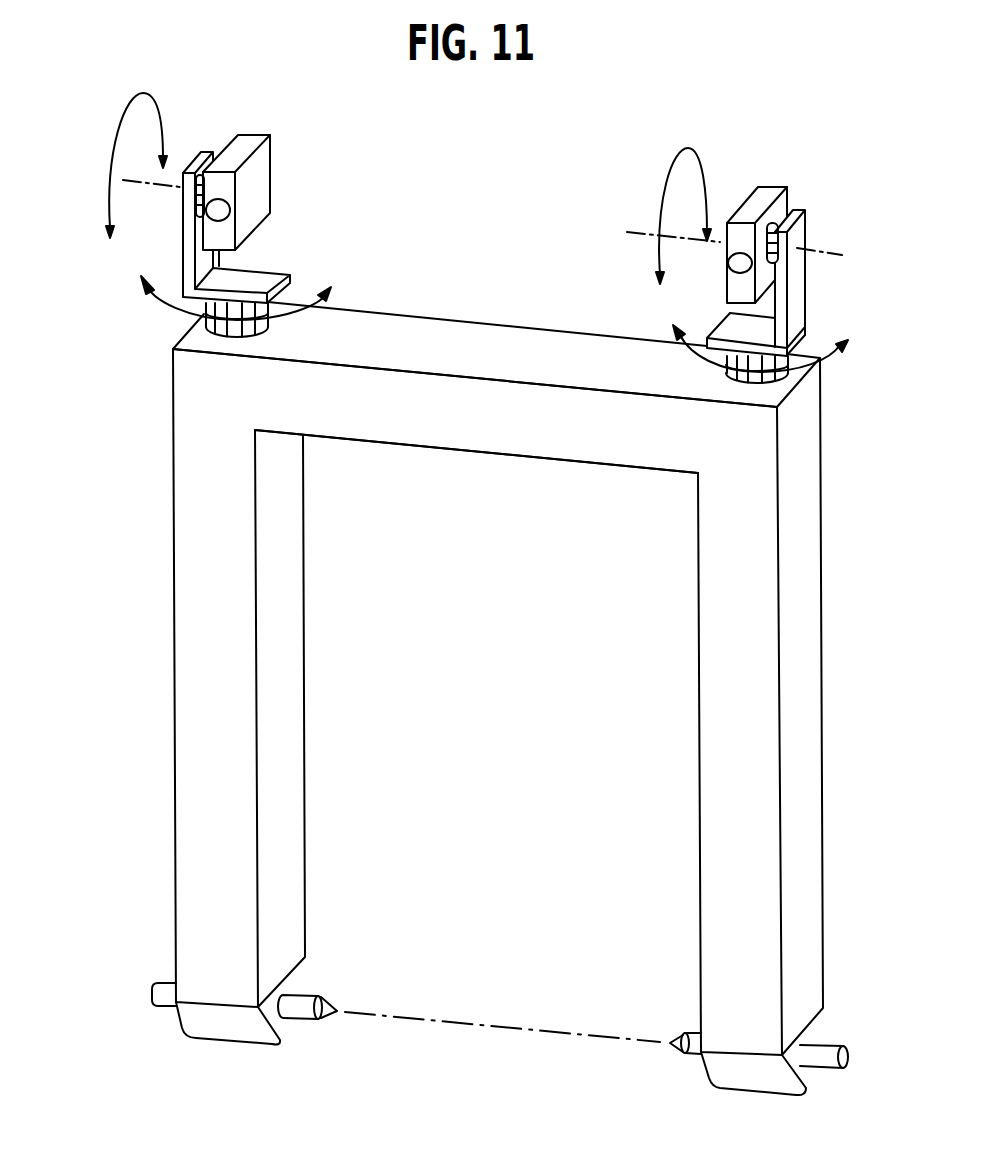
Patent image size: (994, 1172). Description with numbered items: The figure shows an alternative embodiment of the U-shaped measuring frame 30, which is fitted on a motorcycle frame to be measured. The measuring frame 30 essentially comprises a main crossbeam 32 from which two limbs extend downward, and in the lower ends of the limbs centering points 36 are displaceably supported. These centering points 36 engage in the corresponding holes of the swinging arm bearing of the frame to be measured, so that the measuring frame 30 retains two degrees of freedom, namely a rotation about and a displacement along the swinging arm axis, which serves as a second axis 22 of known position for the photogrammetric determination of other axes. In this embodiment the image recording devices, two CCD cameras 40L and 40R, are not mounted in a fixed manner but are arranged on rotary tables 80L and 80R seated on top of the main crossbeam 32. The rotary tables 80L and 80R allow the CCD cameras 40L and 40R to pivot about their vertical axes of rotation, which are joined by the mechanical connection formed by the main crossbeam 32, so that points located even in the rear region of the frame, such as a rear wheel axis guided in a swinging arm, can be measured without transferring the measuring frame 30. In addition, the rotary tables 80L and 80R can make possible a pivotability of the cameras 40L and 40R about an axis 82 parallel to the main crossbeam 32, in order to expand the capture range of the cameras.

The second axis 22 is at (510, 1006).
The measuring frame 30 is at (522, 698).
The main crossbeam 32 is at (521, 437).
The centering points 36 is at (683, 1033).
The CCD camera 40R is at (236, 179).
The CCD camera 40L is at (783, 207).
The rotary table 80R is at (170, 307).
The rotary table 80L is at (787, 357).
The axis 82 is at (253, 193).